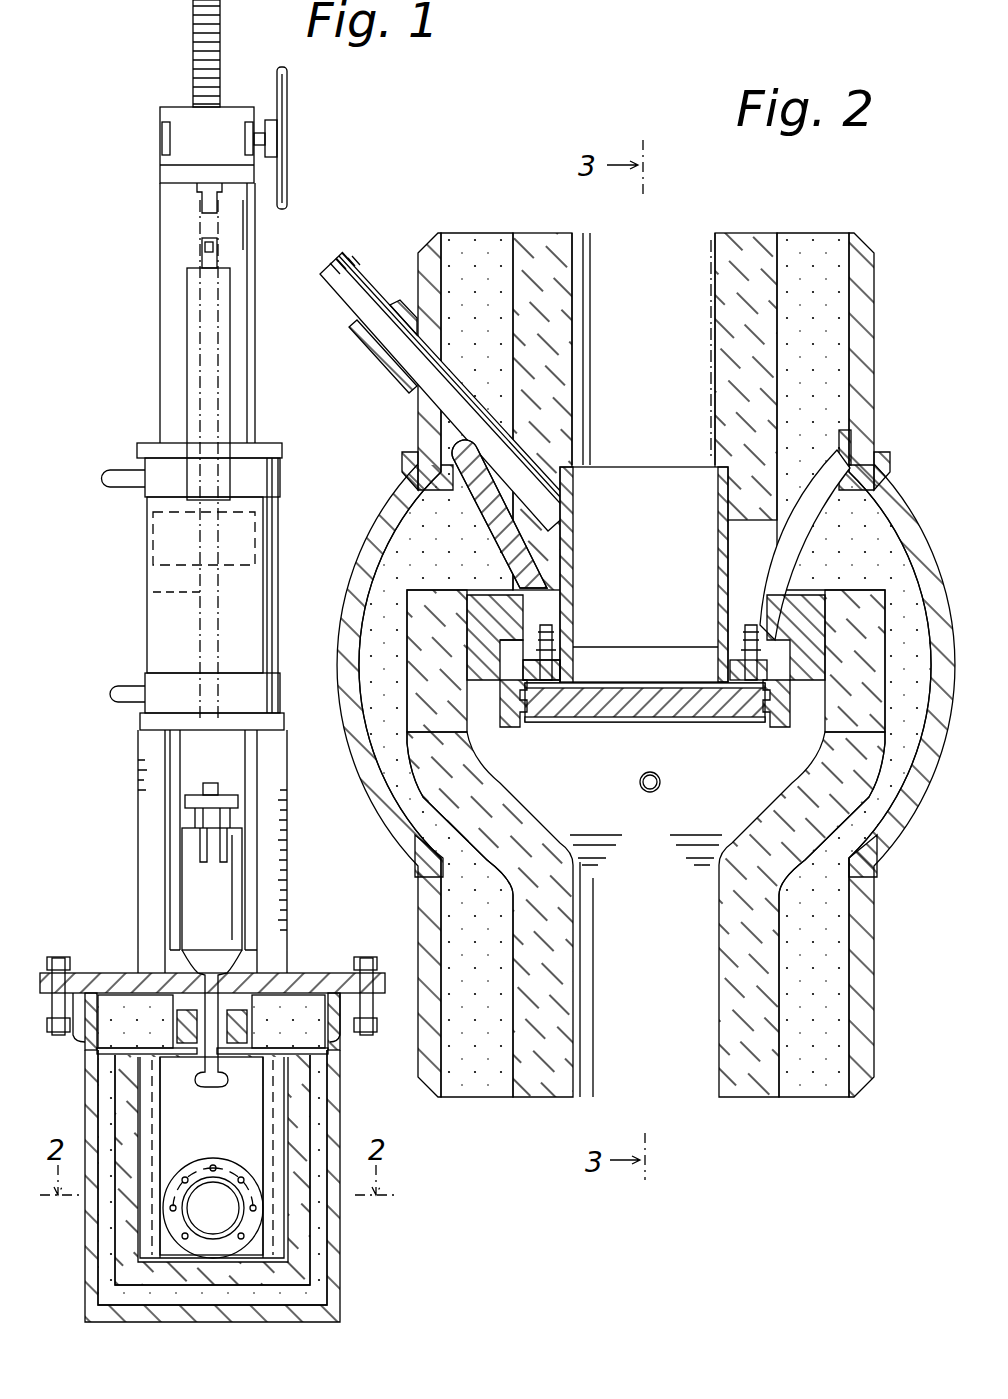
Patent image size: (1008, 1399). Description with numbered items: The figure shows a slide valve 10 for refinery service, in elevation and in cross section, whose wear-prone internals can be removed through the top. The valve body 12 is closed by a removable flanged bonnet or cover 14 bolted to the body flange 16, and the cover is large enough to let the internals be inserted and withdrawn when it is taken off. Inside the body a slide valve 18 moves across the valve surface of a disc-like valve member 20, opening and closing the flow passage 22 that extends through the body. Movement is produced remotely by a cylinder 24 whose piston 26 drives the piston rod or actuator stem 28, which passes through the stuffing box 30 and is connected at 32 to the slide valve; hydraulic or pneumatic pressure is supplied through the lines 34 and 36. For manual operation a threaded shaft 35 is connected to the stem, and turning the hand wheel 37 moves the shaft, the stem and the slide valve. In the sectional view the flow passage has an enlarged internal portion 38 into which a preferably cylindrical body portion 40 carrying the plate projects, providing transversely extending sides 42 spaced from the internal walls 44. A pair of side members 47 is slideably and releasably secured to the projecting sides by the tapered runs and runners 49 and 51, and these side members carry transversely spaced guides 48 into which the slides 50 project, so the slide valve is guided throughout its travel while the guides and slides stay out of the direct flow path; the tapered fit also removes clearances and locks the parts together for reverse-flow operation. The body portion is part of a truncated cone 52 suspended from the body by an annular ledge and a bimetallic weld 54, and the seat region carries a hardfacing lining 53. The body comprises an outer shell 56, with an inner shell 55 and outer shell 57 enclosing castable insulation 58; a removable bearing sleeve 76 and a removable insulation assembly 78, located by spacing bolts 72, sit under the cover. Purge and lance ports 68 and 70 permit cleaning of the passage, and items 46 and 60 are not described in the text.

In FIG. 1, the slide valve 10 is at (350, 1096).
In FIG. 1, the valve body 12 is at (340, 1258).
In FIG. 1, the flanged bonnet or cover 14 is at (322, 983).
In FIG. 1, the body flange 16 is at (380, 1000).
In FIG. 1, the slide valve 18 is at (211, 1156).
In FIG. 2, the slide valve 18 is at (655, 706).
In FIG. 1, the disc-like valve member 20 is at (213, 1208).
In FIG. 2, the disc-like valve member 20 is at (555, 660).
In FIG. 1, the flow passage 22 is at (213, 1208).
In FIG. 2, the flow passage 22 is at (646, 665).
In FIG. 1, the cylinder 24 is at (147, 577).
In FIG. 1, the piston 26 is at (150, 530).
In FIG. 1, the piston rod or actuator stem 28 is at (150, 592).
In FIG. 1, the stuffing box 30 is at (190, 878).
In FIG. 1, the connection 32 is at (222, 1080).
In FIG. 1, the line 34 is at (130, 478).
In FIG. 1, the threaded shaft 35 is at (193, 68).
In FIG. 1, the line 36 is at (130, 690).
In FIG. 1, the hand wheel 37 is at (288, 103).
In FIG. 2, the enlarged internal portion 38 is at (505, 790).
In FIG. 2, the body portion 40 is at (560, 620).
In FIG. 2, the transversely extending sides 42 is at (505, 632).
In FIG. 1, the internal walls 44 is at (275, 1128).
In FIG. 2, the internal walls 44 is at (440, 682).
In FIG. 2, the disc plate 46 is at (600, 710).
In FIG. 2, the side members 47 is at (475, 655).
In FIG. 1, the guides 48 is at (300, 1230).
In FIG. 2, the guides 48 is at (518, 727).
In FIG. 2, the tapered runs and runners 49 is at (395, 475).
In FIG. 2, the slides 50 is at (545, 730).
In FIG. 2, the tapered runs and runners 51 is at (322, 616).
In FIG. 2, the truncated cone 52 is at (530, 552).
In FIG. 2, the lining 53 is at (872, 480).
In FIG. 2, the bimetallic weld 54 is at (840, 452).
In FIG. 1, the inner shell 55 is at (125, 1222).
In FIG. 2, the inner shell 55 is at (555, 680).
In FIG. 1, the outer shell 56 is at (340, 1070).
In FIG. 2, the outer shell 56 is at (865, 298).
In FIG. 1, the outer shell 57 is at (92, 1252).
In FIG. 2, the outer shell 57 is at (905, 800).
In FIG. 1, the insulation 58 is at (318, 1292).
In FIG. 2, the insulation 58 is at (472, 243).
In FIG. 1, the refractory liner 60 is at (298, 1270).
In FIG. 2, the refractory liner 60 is at (720, 262).
In FIG. 2, the purge and lance port 68 is at (357, 278).
In FIG. 2, the purge and lance port 70 is at (656, 792).
In FIG. 1, the spacing bolts 72 is at (187, 1028).
In FIG. 1, the removable bearing sleeve 76 is at (175, 968).
In FIG. 1, the additional insulation 78 is at (292, 1012).